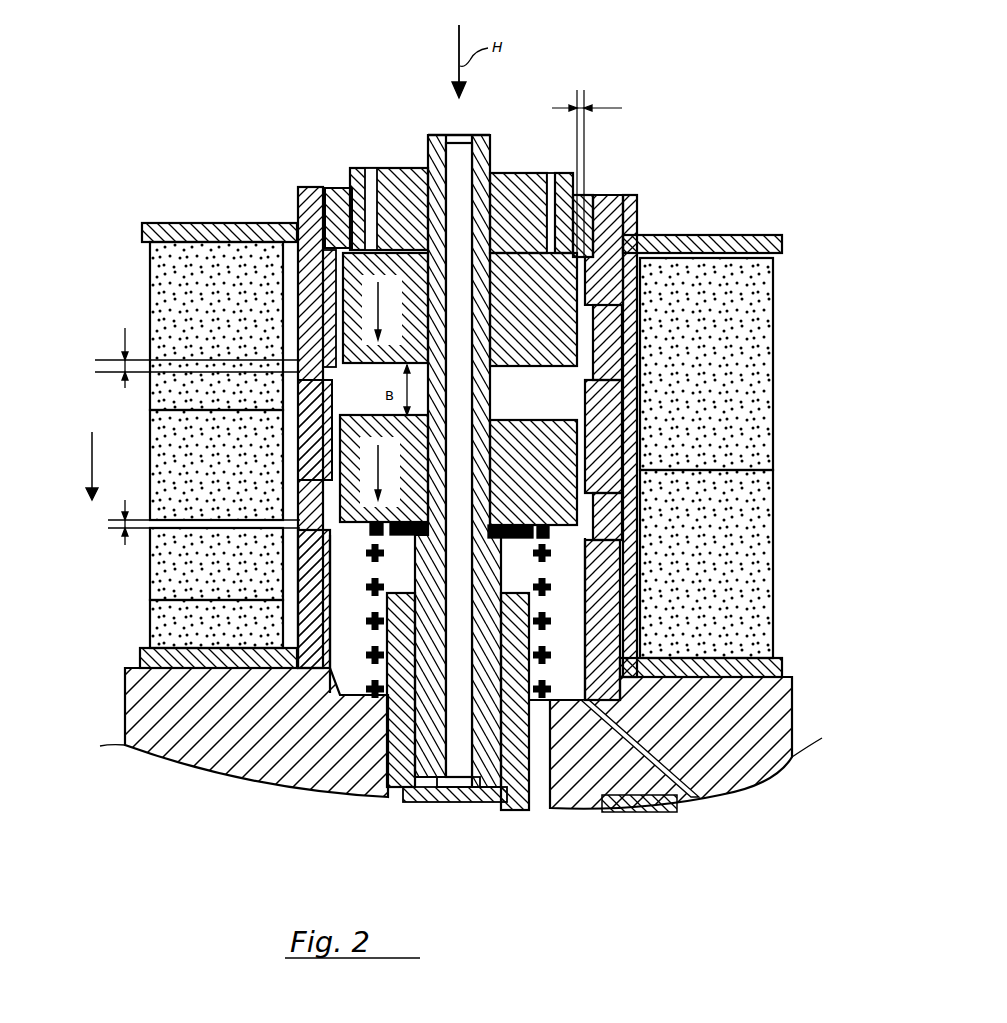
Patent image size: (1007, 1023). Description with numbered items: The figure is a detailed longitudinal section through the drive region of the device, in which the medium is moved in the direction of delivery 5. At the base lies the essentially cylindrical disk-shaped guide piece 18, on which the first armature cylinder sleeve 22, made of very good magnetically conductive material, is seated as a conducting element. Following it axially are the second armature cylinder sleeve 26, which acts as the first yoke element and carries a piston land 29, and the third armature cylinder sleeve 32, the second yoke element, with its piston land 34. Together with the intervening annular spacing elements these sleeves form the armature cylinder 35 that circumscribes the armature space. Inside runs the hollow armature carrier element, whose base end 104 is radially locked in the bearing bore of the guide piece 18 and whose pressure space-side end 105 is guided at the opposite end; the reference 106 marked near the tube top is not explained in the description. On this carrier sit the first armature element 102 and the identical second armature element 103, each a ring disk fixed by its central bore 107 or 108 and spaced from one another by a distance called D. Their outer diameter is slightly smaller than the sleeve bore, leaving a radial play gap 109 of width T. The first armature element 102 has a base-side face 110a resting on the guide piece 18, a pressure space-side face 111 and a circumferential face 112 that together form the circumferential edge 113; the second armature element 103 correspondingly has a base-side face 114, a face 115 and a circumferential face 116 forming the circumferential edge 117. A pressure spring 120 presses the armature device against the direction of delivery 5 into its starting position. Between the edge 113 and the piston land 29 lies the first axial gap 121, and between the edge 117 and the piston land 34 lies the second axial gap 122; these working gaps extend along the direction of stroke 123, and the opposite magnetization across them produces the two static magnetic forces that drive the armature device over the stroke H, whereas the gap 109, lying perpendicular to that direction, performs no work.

The direction of delivery 5 is at (92, 460).
The guide piece 18 is at (400, 168).
The first armature cylinder sleeve 22 is at (297, 197).
The second armature cylinder sleeve 26 is at (310, 437).
The piston land 29 is at (283, 410).
The third armature cylinder sleeve 32 is at (283, 600).
The piston land 34 is at (283, 558).
The armature cylinder 35 is at (630, 210).
The first armature element 102 is at (640, 235).
The second armature element 103 is at (640, 455).
The base end 104 is at (486, 133).
The pressure space-side end 105 is at (416, 802).
The tube bore 106 is at (456, 165).
The central bore 107 is at (497, 368).
The central bore 108 is at (410, 536).
The radial play gap 109 is at (580, 90).
The face 110a is at (525, 172).
The face 111 is at (546, 366).
The circumferential face 112 is at (627, 372).
The circumferential edge 113 is at (343, 364).
The face 114 is at (502, 420).
The face 115 is at (560, 538).
The circumferential face 116 is at (640, 518).
The circumferential edge 117 is at (347, 525).
The pressure spring 120 is at (548, 624).
The first axial gap 121 is at (92, 362).
The second axial gap 122 is at (115, 522).
The direction of stroke 123 is at (454, 61).